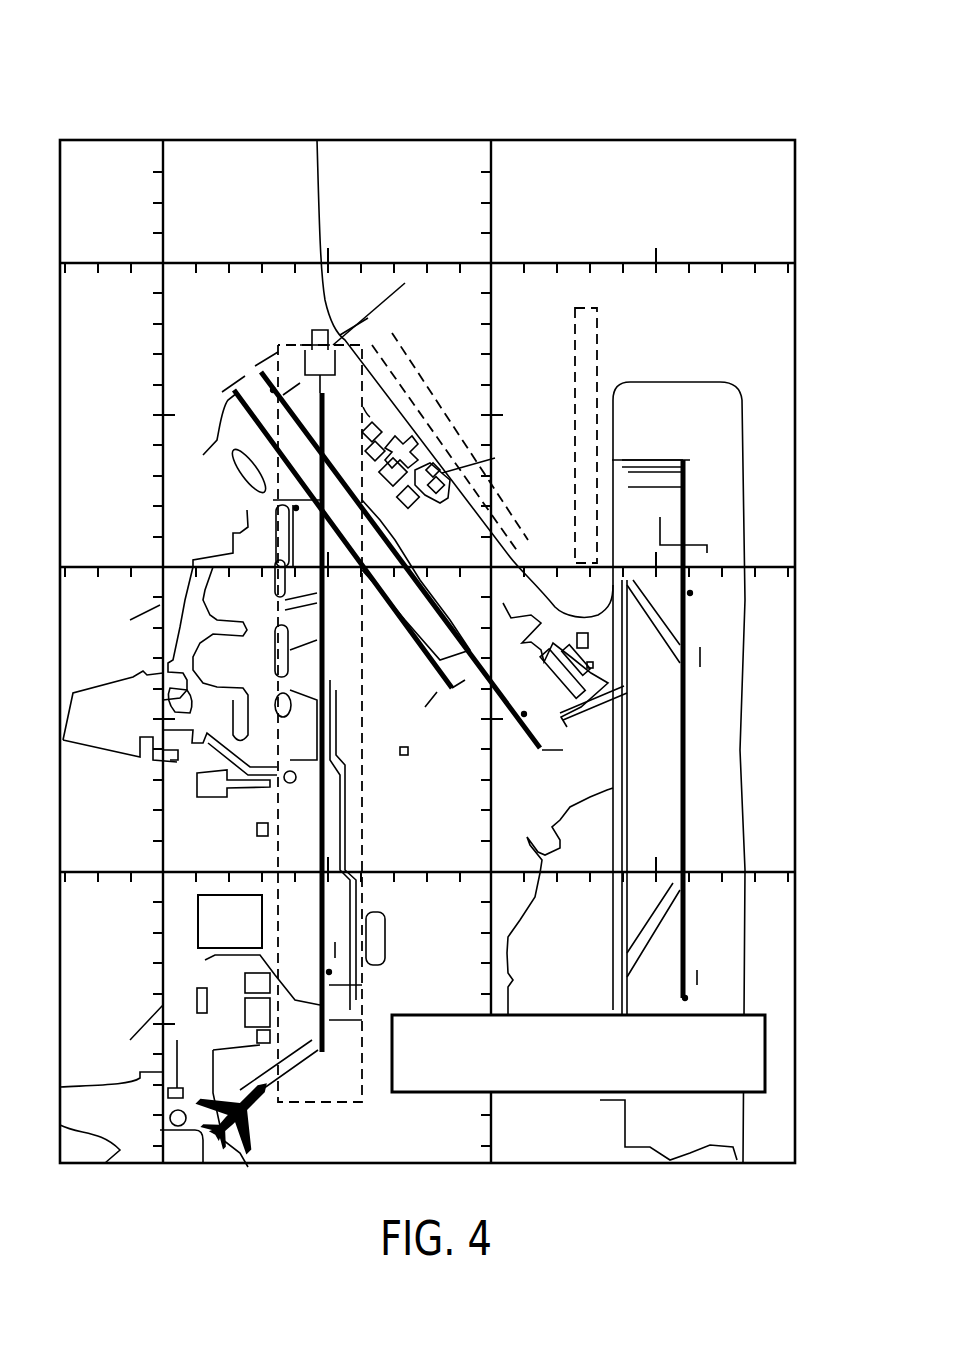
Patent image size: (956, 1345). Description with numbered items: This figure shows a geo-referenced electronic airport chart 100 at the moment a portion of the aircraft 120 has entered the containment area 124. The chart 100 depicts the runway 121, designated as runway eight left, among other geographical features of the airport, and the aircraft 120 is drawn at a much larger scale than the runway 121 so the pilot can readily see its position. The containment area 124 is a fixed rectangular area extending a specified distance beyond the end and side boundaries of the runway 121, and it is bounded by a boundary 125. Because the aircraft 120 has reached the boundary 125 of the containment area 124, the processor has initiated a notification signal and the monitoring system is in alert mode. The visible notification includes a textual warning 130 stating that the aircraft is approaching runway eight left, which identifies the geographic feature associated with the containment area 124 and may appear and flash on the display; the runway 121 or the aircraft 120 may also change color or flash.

The airport chart 100 is at (322, 92).
The aircraft 120 is at (243, 1133).
The runway 121 is at (330, 690).
The containment area 124 is at (352, 862).
The boundary 125 is at (368, 1000).
The textual warning 130 is at (767, 1052).